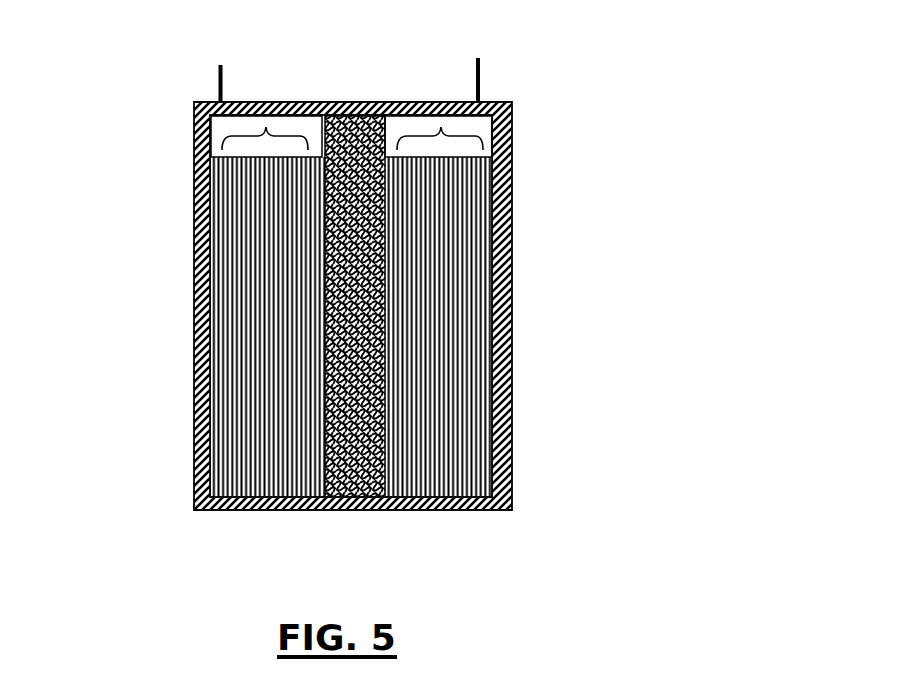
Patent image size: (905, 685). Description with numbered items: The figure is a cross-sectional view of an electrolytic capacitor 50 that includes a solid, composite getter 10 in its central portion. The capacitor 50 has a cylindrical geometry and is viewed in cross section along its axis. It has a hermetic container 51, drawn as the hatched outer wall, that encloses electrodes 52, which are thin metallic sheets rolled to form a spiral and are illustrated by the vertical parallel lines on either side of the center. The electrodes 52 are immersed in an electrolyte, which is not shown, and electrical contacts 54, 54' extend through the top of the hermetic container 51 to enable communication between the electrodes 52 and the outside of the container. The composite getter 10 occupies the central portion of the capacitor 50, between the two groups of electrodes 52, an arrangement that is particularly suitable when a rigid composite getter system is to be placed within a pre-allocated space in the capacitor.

The electrolytic capacitor 50 is at (665, 172).
The hermetic container 51 is at (195, 357).
The electrodes 52 is at (447, 120).
The electrical contact 54 is at (167, 78).
The electrical contact 54' is at (543, 60).
The composite getter 10 is at (362, 447).